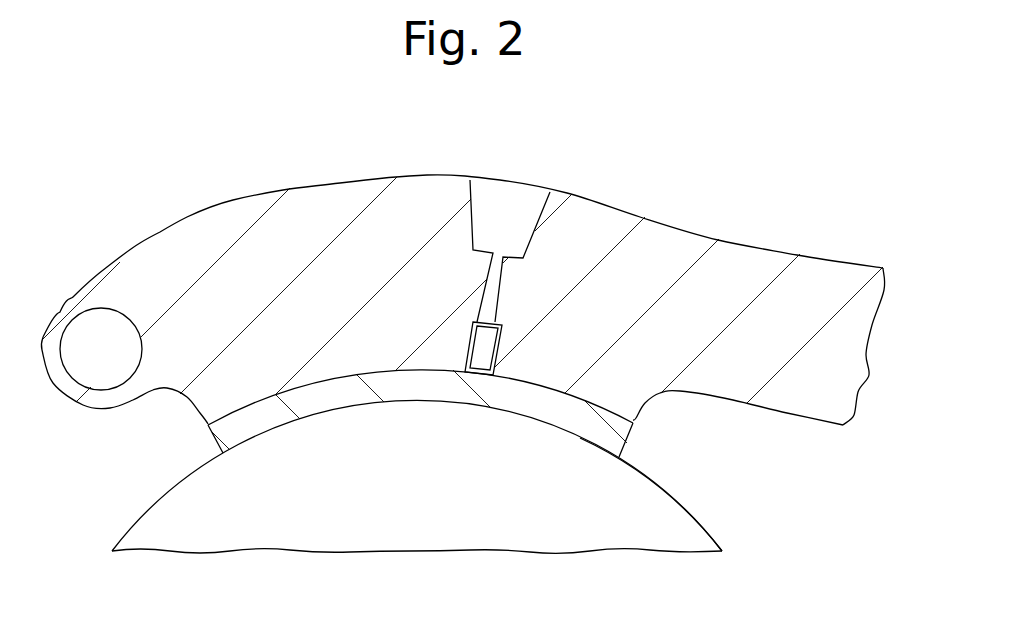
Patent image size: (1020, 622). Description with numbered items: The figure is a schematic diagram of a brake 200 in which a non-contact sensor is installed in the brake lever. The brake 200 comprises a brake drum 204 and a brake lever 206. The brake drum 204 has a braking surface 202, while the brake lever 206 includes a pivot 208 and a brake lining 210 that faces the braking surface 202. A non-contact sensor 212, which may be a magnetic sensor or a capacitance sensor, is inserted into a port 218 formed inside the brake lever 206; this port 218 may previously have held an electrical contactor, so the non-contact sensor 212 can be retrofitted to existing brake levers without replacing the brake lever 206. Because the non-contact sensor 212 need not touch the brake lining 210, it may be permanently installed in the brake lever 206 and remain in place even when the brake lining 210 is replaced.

The brake 200 is at (856, 183).
The braking surface 202 is at (317, 420).
The brake drum 204 is at (648, 478).
The brake lever 206 is at (217, 235).
The pivot 208 is at (100, 323).
The brake lining 210 is at (345, 387).
The non-contact sensor 212 is at (492, 339).
The port 218 is at (473, 323).